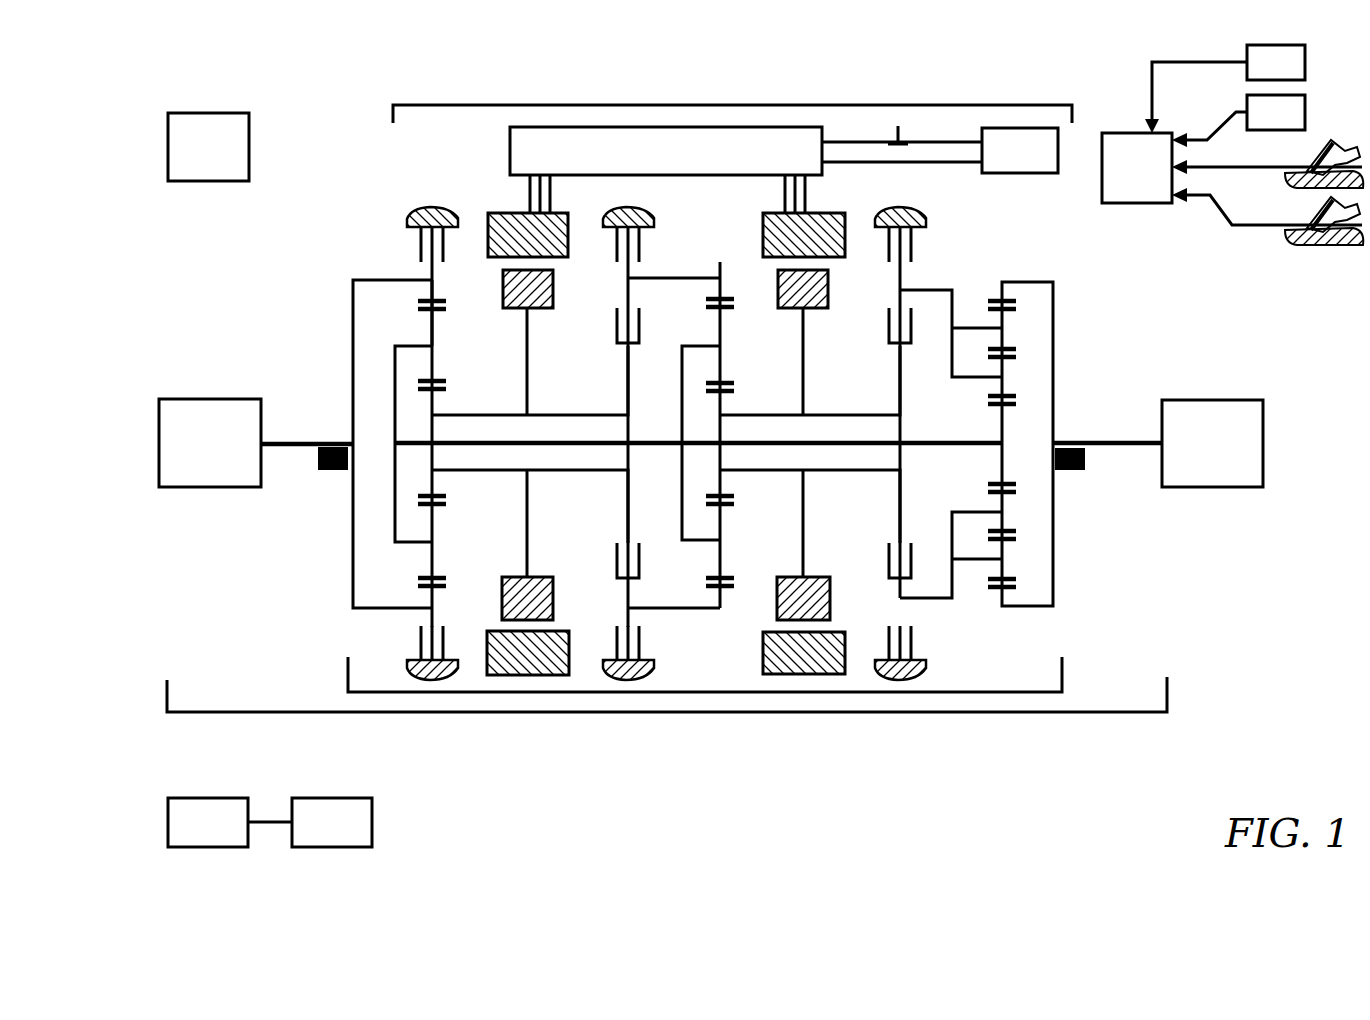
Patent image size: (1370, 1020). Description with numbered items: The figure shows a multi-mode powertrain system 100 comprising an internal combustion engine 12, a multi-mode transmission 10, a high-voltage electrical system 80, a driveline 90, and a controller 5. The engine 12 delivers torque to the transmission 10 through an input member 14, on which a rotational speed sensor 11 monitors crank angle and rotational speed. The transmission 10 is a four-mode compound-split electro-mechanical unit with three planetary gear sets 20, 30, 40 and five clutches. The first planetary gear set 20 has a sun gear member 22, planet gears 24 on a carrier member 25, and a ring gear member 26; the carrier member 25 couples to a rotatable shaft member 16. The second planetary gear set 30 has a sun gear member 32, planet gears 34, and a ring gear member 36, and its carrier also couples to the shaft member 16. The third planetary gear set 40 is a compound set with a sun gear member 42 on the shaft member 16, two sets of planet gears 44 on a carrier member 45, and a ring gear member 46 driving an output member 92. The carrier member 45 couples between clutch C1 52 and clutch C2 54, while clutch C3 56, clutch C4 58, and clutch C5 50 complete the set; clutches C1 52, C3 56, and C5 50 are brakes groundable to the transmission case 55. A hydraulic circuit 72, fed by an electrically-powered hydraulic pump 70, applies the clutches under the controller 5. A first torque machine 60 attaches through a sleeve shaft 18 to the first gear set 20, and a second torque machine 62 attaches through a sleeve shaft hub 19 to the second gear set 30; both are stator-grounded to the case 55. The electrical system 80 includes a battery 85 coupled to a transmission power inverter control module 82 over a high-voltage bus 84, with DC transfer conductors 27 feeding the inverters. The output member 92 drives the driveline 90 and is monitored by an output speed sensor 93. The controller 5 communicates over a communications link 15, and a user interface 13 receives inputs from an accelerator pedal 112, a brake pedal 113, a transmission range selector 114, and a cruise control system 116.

The controller 5 is at (215, 158).
The multi-mode transmission 10 is at (837, 693).
The rotational speed sensor 11 is at (333, 472).
The internal combustion engine 12 is at (222, 455).
The user interface 13 is at (1149, 181).
The input member 14 is at (298, 450).
The communications link 15 is at (206, 233).
The rotatable shaft member 16 is at (637, 440).
The sleeve shaft 18 is at (572, 414).
The sleeve shaft hub 19 is at (853, 414).
The first planetary gear set 20 is at (452, 495).
The sun gear member 22 is at (440, 400).
The planet gears 24 is at (437, 350).
The carrier member 25 is at (397, 415).
The ring gear member 26 is at (438, 300).
The DC transfer conductors 27 is at (543, 192).
The second planetary gear set 30 is at (733, 495).
The sun gear member 32 is at (726, 400).
The planet gears 34 is at (722, 348).
The ring gear member 36 is at (722, 300).
The third planetary gear set 40 is at (988, 428).
The sun gear member 42 is at (1012, 482).
The planet gears 44 is at (1005, 514).
The carrier member 45 is at (953, 300).
The ring gear member 46 is at (1003, 595).
The clutch C5 50 is at (428, 250).
The clutch C1 52 is at (913, 248).
The clutch C2 54 is at (889, 334).
The transmission case 55 is at (420, 212).
The clutch C3 56 is at (642, 246).
The clutch C4 58 is at (616, 334).
The first torque machine 60 is at (551, 260).
The second torque machine 62 is at (822, 262).
The electrically-powered hydraulic pump 70 is at (221, 834).
The hydraulic circuit 72 is at (345, 834).
The high-voltage electrical system 80 is at (738, 105).
The transmission power inverter control module 82 is at (679, 162).
The high-voltage electrical bus 84 is at (935, 142).
The high-voltage battery 85 is at (1033, 162).
The driveline 90 is at (1225, 456).
The output member 92 is at (1112, 440).
The transmission output speed sensor 93 is at (1085, 462).
The powertrain system 100 is at (738, 713).
The accelerator pedal 112 is at (1305, 225).
The operator brake pedal 113 is at (1305, 168).
The transmission range selector 114 is at (1294, 124).
The vehicle speed cruise control system 116 is at (1294, 74).